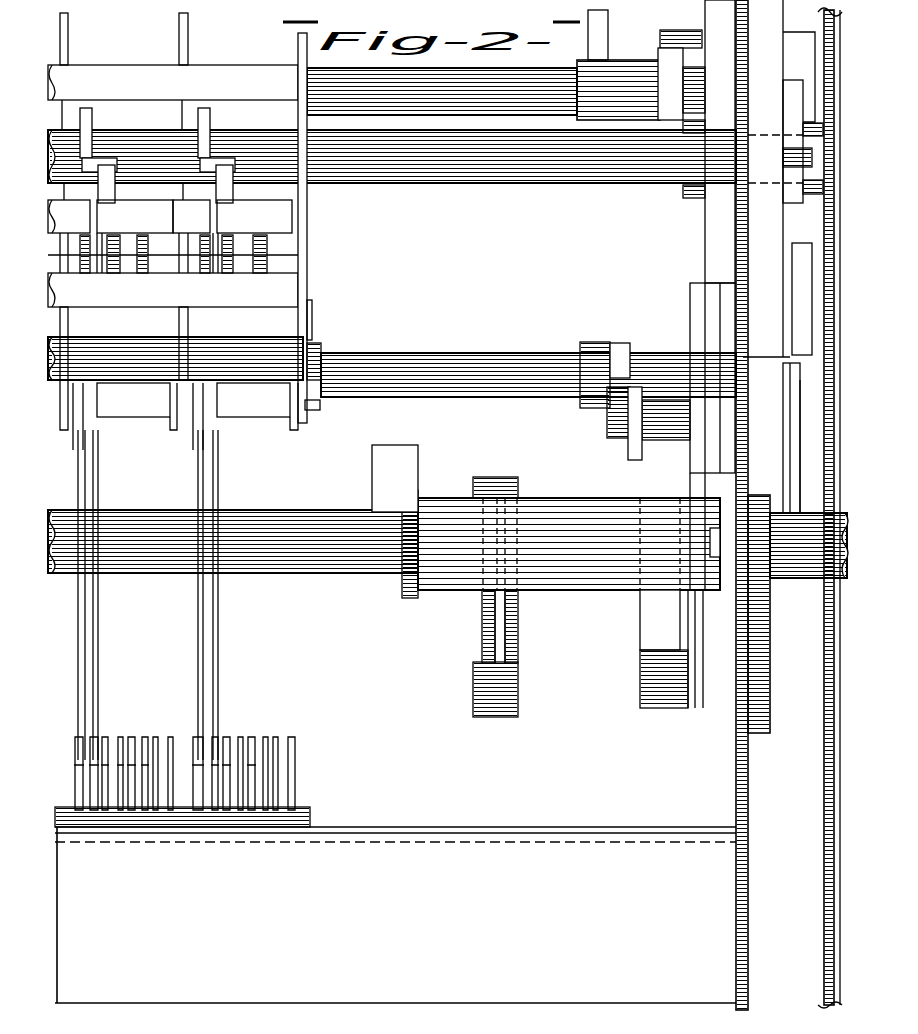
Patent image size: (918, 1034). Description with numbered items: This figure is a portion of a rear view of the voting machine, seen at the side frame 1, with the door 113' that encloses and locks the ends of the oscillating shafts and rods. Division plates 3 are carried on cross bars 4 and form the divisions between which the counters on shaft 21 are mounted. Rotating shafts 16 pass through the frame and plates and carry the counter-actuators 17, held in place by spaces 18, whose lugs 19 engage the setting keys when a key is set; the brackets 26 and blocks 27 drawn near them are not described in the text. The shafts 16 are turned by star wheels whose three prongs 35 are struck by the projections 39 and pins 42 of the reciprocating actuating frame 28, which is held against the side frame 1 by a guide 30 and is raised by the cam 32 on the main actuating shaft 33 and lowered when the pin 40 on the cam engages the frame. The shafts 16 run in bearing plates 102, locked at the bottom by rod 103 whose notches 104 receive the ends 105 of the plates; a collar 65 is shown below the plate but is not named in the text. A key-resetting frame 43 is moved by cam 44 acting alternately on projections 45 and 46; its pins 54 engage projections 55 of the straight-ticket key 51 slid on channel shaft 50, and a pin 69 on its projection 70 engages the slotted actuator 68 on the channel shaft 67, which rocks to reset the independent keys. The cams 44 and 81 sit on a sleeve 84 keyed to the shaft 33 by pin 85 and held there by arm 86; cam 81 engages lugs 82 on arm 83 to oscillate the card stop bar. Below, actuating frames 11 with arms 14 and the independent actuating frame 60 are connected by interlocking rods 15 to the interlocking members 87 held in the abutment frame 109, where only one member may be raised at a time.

The side frame 1 is at (763, 213).
The division plates 3 is at (68, 45).
The cross bars 4 is at (173, 186).
The actuating frames 11 is at (225, 217).
The arm 14 is at (129, 216).
The interlocking rods 15 is at (85, 475).
The rotating shafts 16 is at (492, 175).
The counter-actuators 17 is at (152, 158).
The spacers 18 is at (204, 155).
The lugs 19 is at (190, 190).
The shaft 21 is at (280, 258).
The bracket 26 is at (95, 125).
The block 27 is at (194, 216).
The reciprocating actuating frame 28 is at (764, 178).
The guide 30 is at (790, 430).
The cam 32 is at (770, 690).
The main actuating shaft 33 is at (300, 515).
The prongs 35 is at (800, 90).
The projections 39 is at (800, 44).
The pin 40 is at (773, 500).
The pins 42 is at (785, 156).
The key-resetting frame 43 is at (715, 200).
The cam 44 is at (650, 628).
The projection 45 is at (655, 478).
The projection 46 is at (640, 698).
The channel shafts 50 is at (490, 85).
The straight-ticket setting keys 51 is at (620, 80).
The pins 54 is at (695, 154).
The projections 55 is at (676, 35).
The independent actuating frame 60 is at (179, 415).
The collar 65 is at (312, 410).
The channel shaft 67 is at (480, 368).
The slotted actuator 68 is at (598, 345).
The pin 69 is at (600, 410).
The projection 70 is at (630, 445).
The cam 81 is at (482, 625).
The lugs 82 is at (497, 480).
The arm 83 is at (518, 645).
The sleeve 84 is at (569, 544).
The pin 85 is at (710, 542).
The arm 86 is at (418, 490).
The interlocking members 87 is at (173, 742).
The bearing plate 102 is at (307, 217).
The rod 103 is at (260, 338).
The notches 104 is at (322, 360).
The ends 105 is at (312, 318).
The abutment frame 109 is at (308, 815).
The door 113' is at (799, 508).